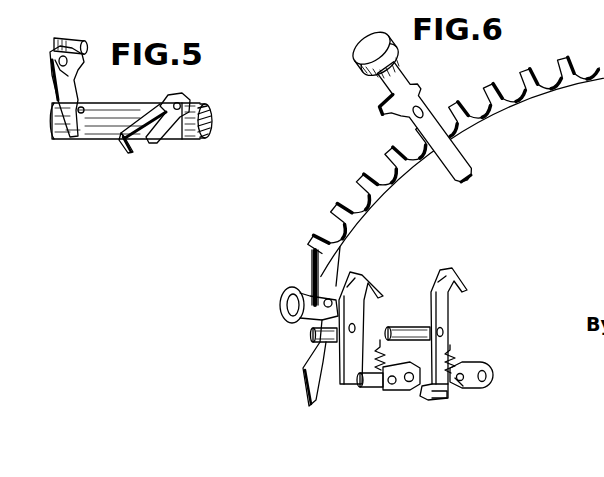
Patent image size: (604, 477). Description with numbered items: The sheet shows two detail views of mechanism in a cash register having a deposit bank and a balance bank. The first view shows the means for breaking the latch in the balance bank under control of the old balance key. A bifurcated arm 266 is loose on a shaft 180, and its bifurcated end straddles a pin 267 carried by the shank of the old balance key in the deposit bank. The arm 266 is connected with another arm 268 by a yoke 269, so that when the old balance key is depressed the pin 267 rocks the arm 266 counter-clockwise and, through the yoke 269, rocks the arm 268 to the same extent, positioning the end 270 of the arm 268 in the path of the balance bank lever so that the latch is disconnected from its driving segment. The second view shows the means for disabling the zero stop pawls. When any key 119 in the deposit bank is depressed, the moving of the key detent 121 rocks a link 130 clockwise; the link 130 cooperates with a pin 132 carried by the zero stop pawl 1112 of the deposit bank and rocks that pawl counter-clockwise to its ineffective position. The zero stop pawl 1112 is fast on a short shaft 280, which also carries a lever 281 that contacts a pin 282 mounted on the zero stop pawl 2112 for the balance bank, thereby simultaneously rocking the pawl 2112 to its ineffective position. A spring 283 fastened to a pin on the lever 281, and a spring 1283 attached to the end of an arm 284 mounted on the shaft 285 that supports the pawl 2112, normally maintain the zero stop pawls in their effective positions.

In FIG. 6, the key 119 is at (364, 57).
In FIG. 6, the key detent 121 is at (551, 90).
In FIG. 6, the link 130 is at (322, 365).
In FIG. 6, the pin 132 is at (315, 336).
In FIG. 6, the zero stop pawl 1112 is at (360, 282).
In FIG. 6, the zero stop pawl 2112 is at (452, 283).
In FIG. 6, the short shaft 280 is at (370, 389).
In FIG. 6, the lever 281 is at (397, 390).
In FIG. 6, the pin 282 is at (403, 326).
In FIG. 6, the spring 283 is at (380, 346).
In FIG. 6, the spring 1283 is at (449, 358).
In FIG. 6, the arm 284 is at (468, 383).
In FIG. 6, the shaft 285 is at (486, 373).
In FIG. 5, the bifurcated arm 266 is at (75, 85).
In FIG. 5, the pin 267 is at (57, 43).
In FIG. 5, the arm 268 is at (161, 132).
In FIG. 5, the yoke 269 is at (97, 140).
In FIG. 5, the end 270 is at (127, 150).
In FIG. 5, the shaft 180 is at (206, 133).